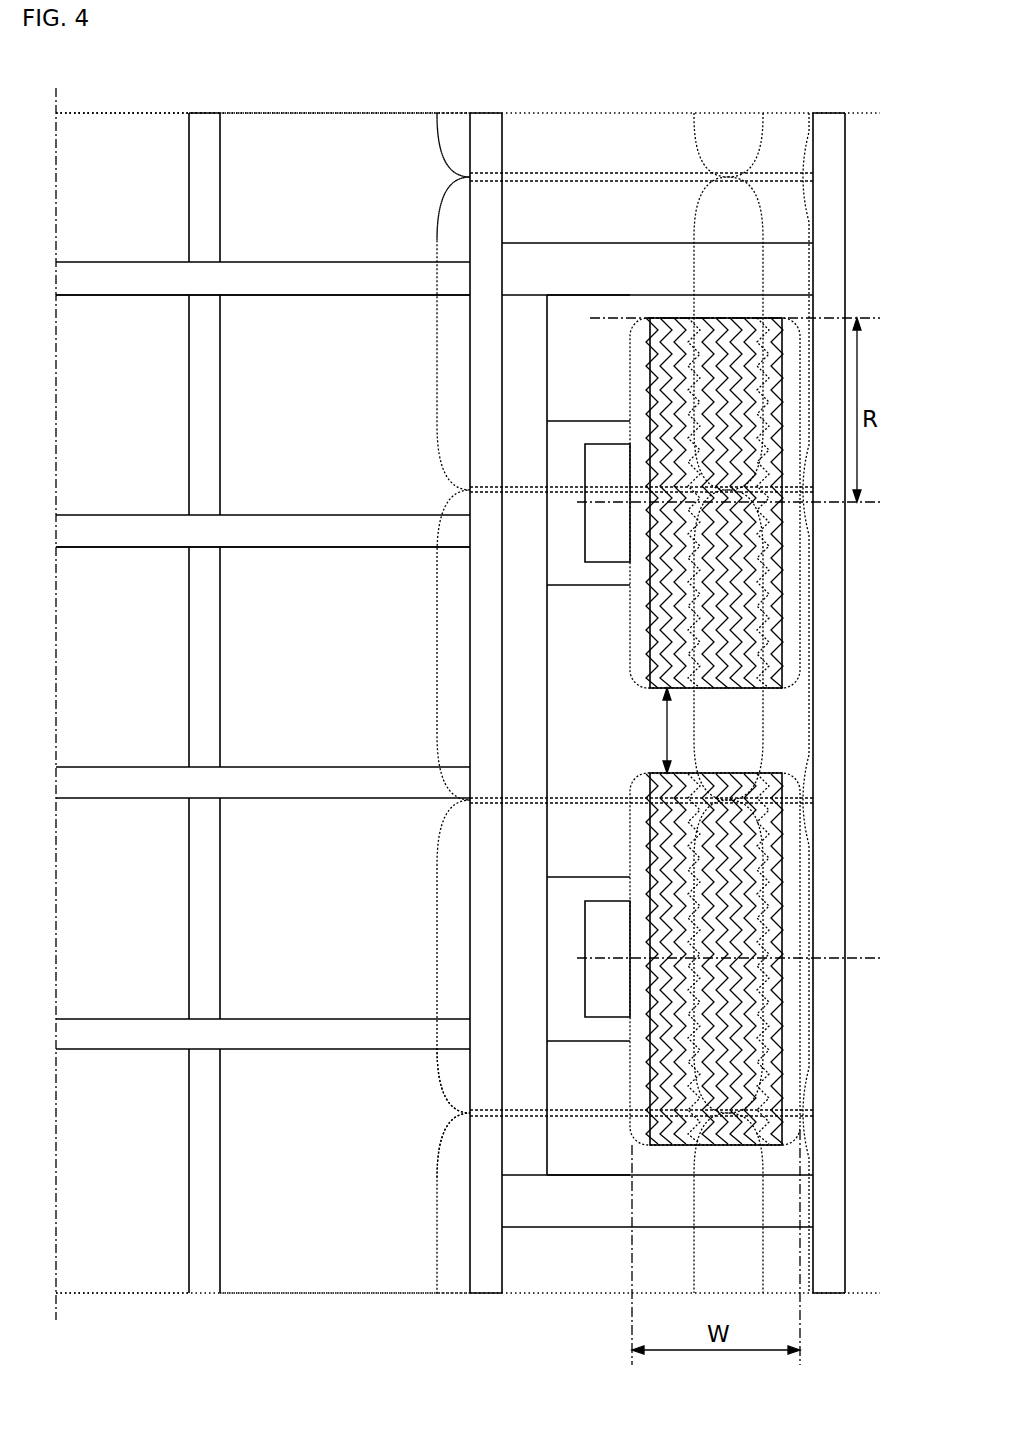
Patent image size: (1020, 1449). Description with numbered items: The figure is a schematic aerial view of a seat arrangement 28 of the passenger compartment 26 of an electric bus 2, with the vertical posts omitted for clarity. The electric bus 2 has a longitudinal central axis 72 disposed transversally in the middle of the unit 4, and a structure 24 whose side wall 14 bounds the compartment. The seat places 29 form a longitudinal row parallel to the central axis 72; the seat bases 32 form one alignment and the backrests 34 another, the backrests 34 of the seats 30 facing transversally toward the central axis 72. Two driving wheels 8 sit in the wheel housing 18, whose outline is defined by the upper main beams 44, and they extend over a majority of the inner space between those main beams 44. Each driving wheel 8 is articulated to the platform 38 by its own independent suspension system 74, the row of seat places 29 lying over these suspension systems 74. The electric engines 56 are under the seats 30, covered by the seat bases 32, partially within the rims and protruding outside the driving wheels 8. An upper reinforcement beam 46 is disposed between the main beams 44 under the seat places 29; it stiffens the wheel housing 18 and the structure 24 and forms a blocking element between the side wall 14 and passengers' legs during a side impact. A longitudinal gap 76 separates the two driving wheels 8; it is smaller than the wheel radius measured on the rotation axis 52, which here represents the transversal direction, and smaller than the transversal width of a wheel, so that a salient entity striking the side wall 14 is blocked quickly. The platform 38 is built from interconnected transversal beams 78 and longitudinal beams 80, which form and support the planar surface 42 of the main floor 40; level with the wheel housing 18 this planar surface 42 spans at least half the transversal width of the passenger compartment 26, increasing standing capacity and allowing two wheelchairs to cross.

The electric bus 2 is at (131, 90).
The unit 4 is at (215, 90).
The driving wheel 8 is at (744, 639).
The side wall 14 is at (845, 815).
The wheel housing 18 is at (600, 669).
The structure 24 is at (313, 90).
The passenger compartment 26 is at (400, 90).
The seat arrangement 28 is at (487, 90).
The seat place 29 is at (420, 643).
The seat 30 is at (411, 150).
The seat base 32 is at (560, 158).
The backrest 34 is at (690, 207).
The platform 38 is at (142, 247).
The main floor 40 is at (142, 454).
The planar surface 42 is at (142, 709).
The main beam 44 is at (485, 1283).
The reinforcement beam 46 is at (540, 752).
The rotation axis 52 is at (835, 502).
The electric engine 56 is at (622, 545).
The longitudinal central axis 72 is at (60, 963).
The suspension system 74 is at (581, 469).
The longitudinal gap 76 is at (650, 730).
The transversal beam 78 is at (253, 268).
The longitudinal beam 80 is at (205, 336).